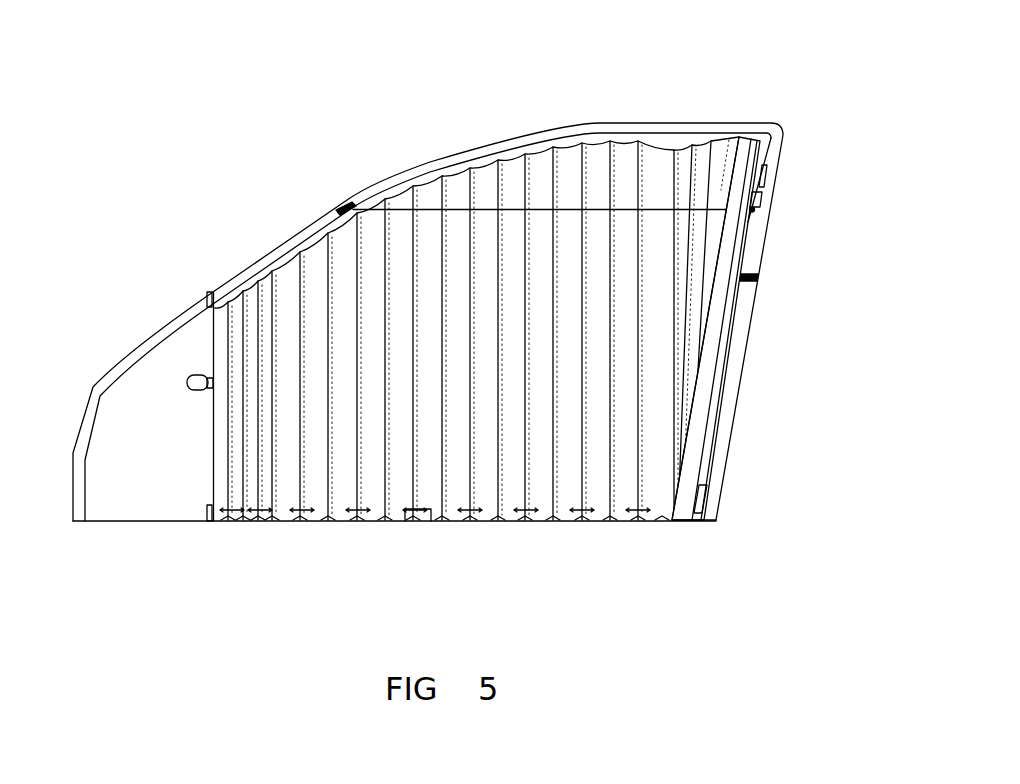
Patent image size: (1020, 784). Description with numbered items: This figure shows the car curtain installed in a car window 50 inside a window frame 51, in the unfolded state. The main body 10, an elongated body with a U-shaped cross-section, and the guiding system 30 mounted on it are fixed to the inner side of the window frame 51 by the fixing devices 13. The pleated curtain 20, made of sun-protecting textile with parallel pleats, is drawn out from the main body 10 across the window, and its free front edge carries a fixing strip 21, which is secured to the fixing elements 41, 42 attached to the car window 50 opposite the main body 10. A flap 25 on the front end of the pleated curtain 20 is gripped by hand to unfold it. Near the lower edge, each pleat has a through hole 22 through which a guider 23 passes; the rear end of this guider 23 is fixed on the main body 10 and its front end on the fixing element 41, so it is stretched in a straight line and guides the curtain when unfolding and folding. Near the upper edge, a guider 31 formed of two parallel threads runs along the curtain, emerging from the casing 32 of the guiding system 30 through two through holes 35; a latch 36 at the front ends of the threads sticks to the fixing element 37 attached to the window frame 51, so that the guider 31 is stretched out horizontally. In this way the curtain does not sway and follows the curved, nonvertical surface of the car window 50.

The main body 10 is at (717, 327).
The fixing devices 13 is at (765, 172).
The pleated curtain 20 is at (572, 206).
The fixing strip 21 is at (213, 349).
The through hole 22 is at (429, 522).
The guider 23 is at (406, 522).
The flap 25 is at (187, 383).
The guiding system 30 is at (758, 278).
The guider 31 is at (455, 207).
The casing 32 is at (722, 377).
The through holes 35 is at (755, 209).
The latch 36 is at (343, 206).
The fixing element 37 is at (320, 211).
The fixing element 41 is at (207, 518).
The fixing element 42 is at (209, 296).
The car window 50 is at (120, 404).
The window frame 51 is at (741, 356).